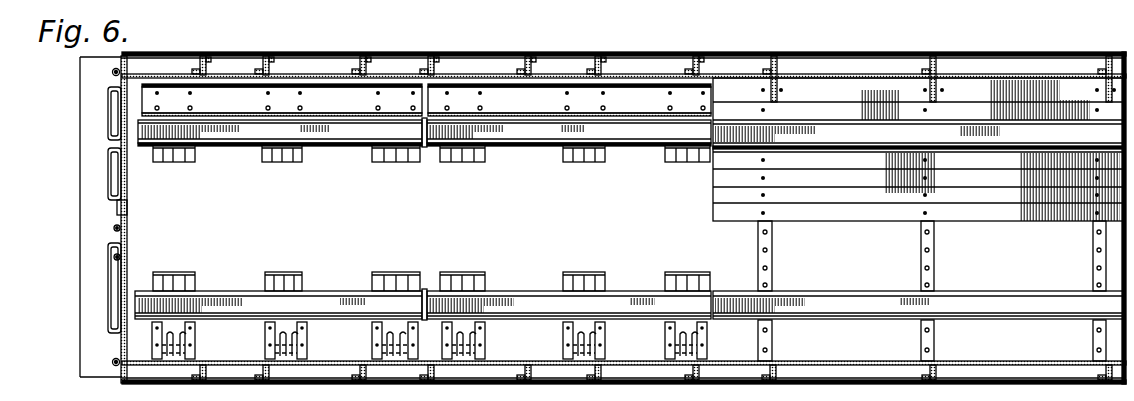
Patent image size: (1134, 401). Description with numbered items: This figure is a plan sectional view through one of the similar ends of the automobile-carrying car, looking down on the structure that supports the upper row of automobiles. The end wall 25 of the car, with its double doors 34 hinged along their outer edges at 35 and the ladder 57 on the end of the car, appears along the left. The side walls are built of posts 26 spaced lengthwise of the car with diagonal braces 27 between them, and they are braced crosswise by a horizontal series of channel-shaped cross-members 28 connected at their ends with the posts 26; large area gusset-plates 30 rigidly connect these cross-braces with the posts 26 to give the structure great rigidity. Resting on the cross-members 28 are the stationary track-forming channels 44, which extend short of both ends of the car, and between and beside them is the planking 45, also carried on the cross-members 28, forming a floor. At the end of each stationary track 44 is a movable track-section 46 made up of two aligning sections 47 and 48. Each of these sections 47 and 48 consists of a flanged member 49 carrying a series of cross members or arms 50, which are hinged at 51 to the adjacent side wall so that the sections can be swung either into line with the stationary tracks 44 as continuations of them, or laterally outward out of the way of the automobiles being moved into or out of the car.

The end wall 25 is at (119, 292).
The post 26 is at (592, 62).
The diagonal brace 27 is at (524, 62).
The cross-member 28 is at (774, 268).
The gusset-plate 30 is at (774, 338).
The double door 34 is at (126, 248).
The hinge 35 is at (112, 72).
The track-forming channel 44 is at (1057, 302).
The planking 45 is at (1058, 205).
The movable track-section 46 is at (250, 149).
The aligning section 47 is at (548, 133).
The aligning section 48 is at (357, 134).
The flanged member 49 is at (437, 149).
The cross member or arm 50 is at (680, 160).
The hinge 51 is at (236, 330).
The ladder 57 is at (108, 138).